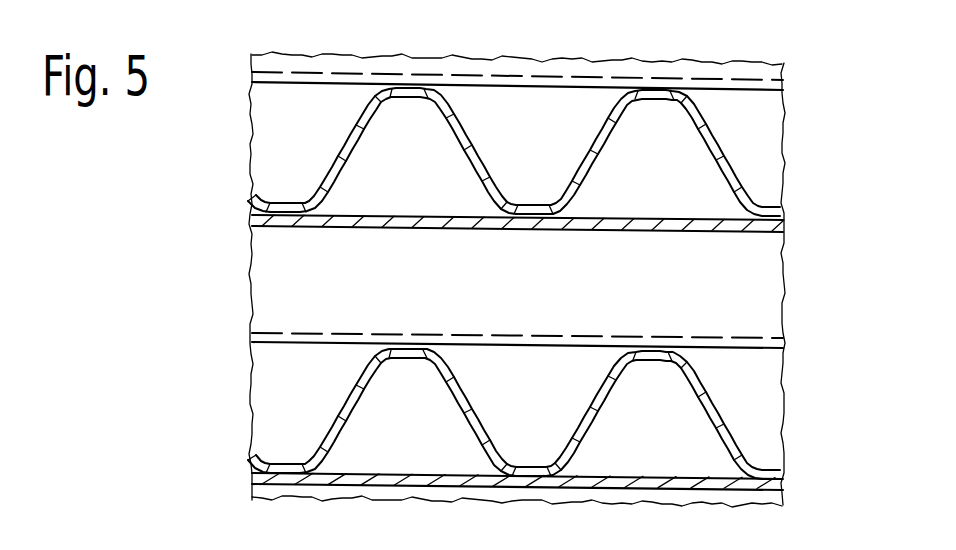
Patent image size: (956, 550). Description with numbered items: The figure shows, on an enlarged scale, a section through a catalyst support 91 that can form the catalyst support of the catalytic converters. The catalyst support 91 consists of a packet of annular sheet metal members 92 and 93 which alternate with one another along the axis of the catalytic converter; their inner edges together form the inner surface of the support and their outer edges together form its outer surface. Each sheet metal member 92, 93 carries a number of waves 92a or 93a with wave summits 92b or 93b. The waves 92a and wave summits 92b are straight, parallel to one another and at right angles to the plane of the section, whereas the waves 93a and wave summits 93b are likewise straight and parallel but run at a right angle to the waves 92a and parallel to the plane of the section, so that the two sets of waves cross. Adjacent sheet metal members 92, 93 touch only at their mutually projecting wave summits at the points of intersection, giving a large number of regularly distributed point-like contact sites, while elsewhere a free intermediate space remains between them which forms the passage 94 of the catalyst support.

The catalyst support 91 is at (251, 54).
The sheet metal member 92 is at (516, 244).
The wave 92a is at (366, 108).
The wave summit 92b is at (415, 87).
The sheet metal member 93 is at (484, 339).
The wave 93a is at (345, 215).
The wave summit 93b is at (413, 215).
The passage of catalyst support 94 is at (252, 300).